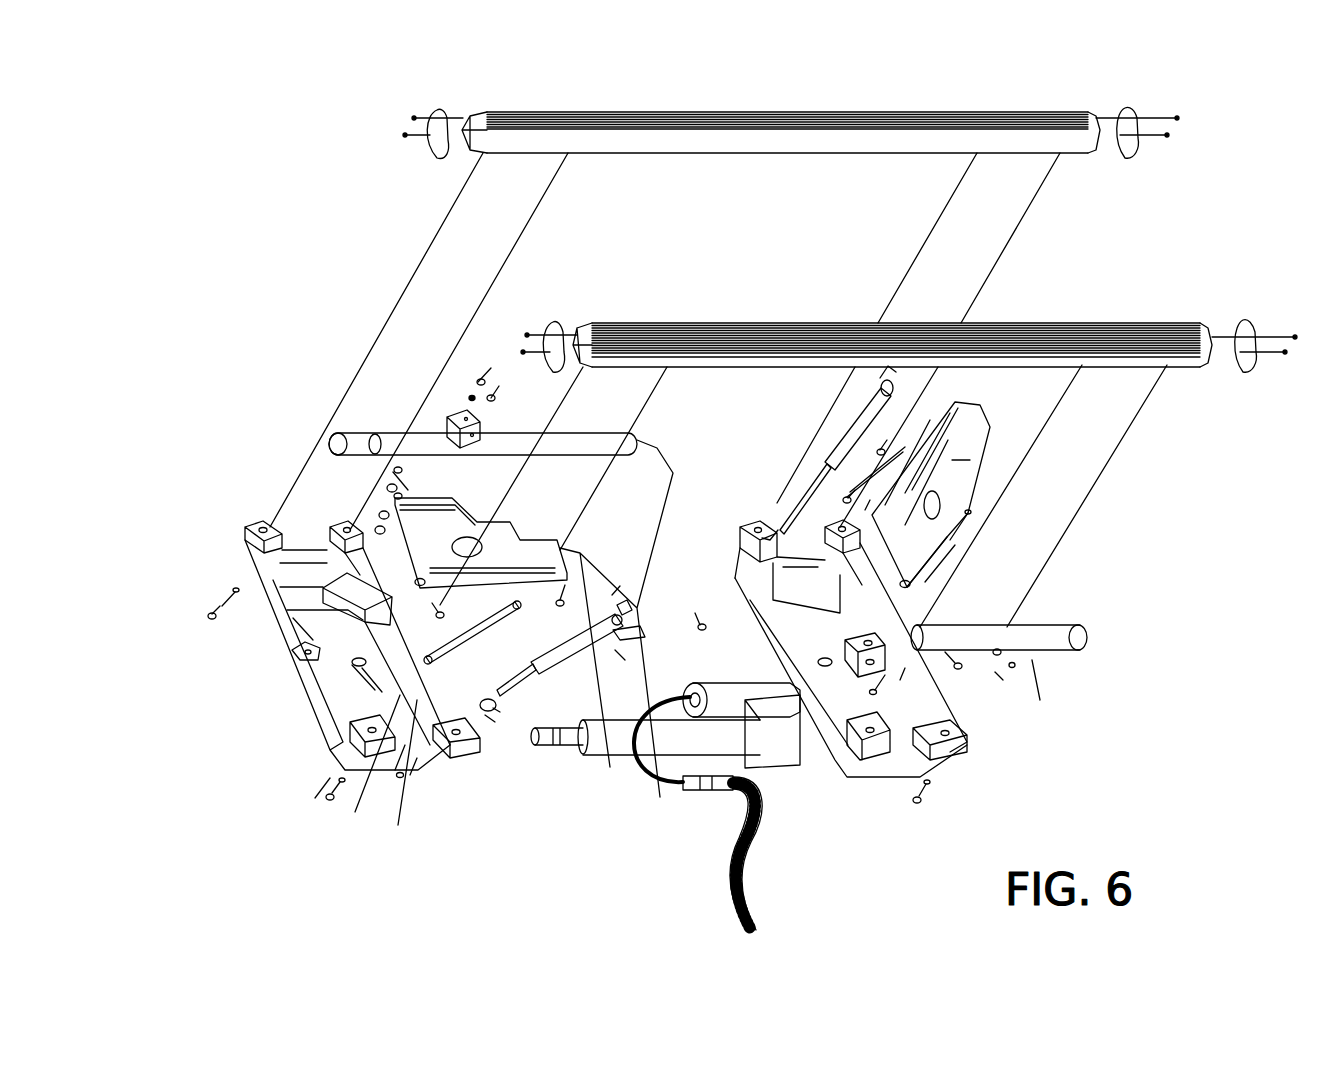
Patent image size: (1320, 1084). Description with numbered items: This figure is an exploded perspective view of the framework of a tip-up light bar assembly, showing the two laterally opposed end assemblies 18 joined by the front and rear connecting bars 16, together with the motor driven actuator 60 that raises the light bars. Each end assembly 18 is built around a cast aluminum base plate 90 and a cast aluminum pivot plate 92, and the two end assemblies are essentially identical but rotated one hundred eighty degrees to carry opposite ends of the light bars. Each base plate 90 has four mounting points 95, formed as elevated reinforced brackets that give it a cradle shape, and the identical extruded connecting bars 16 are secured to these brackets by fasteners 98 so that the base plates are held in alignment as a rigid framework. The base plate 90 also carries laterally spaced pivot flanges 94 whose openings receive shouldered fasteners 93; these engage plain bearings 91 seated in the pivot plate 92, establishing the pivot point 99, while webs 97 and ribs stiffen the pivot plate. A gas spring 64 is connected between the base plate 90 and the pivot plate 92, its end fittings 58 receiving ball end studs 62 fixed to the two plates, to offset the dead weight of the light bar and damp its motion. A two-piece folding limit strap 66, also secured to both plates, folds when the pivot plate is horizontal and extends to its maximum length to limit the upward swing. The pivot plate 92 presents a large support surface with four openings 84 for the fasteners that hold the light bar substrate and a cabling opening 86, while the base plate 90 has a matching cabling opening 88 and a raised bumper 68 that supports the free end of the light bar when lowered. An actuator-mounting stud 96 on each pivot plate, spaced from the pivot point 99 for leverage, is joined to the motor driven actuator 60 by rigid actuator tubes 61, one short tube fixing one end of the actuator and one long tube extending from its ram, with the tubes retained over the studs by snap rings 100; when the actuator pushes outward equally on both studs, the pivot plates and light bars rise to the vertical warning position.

The connecting bar 16 is at (643, 153).
The end assembly 18 is at (245, 636).
The end fitting 58 is at (496, 722).
The motor driven actuator 60 is at (692, 690).
The actuator tube 61 is at (392, 432).
The ball end stud 62 is at (665, 812).
The gas spring 64 is at (612, 768).
The folding limit strap 66 is at (470, 645).
The bumper 68 is at (449, 408).
The opening 84 is at (522, 530).
The cabling opening 86 is at (477, 527).
The cabling opening 88 is at (345, 665).
The base plate 90 is at (313, 720).
The plain bearing 91 is at (383, 512).
The pivot plate 92 is at (385, 483).
The shouldered fastener 93 is at (378, 527).
The pivot flange 94 is at (295, 648).
The mounting point 95 is at (258, 525).
The actuator-mounting stud 96 is at (403, 471).
The web 97 is at (933, 573).
The fastener 98 is at (330, 802).
The pivot point 99 is at (424, 584).
The snap ring 100 is at (1013, 668).